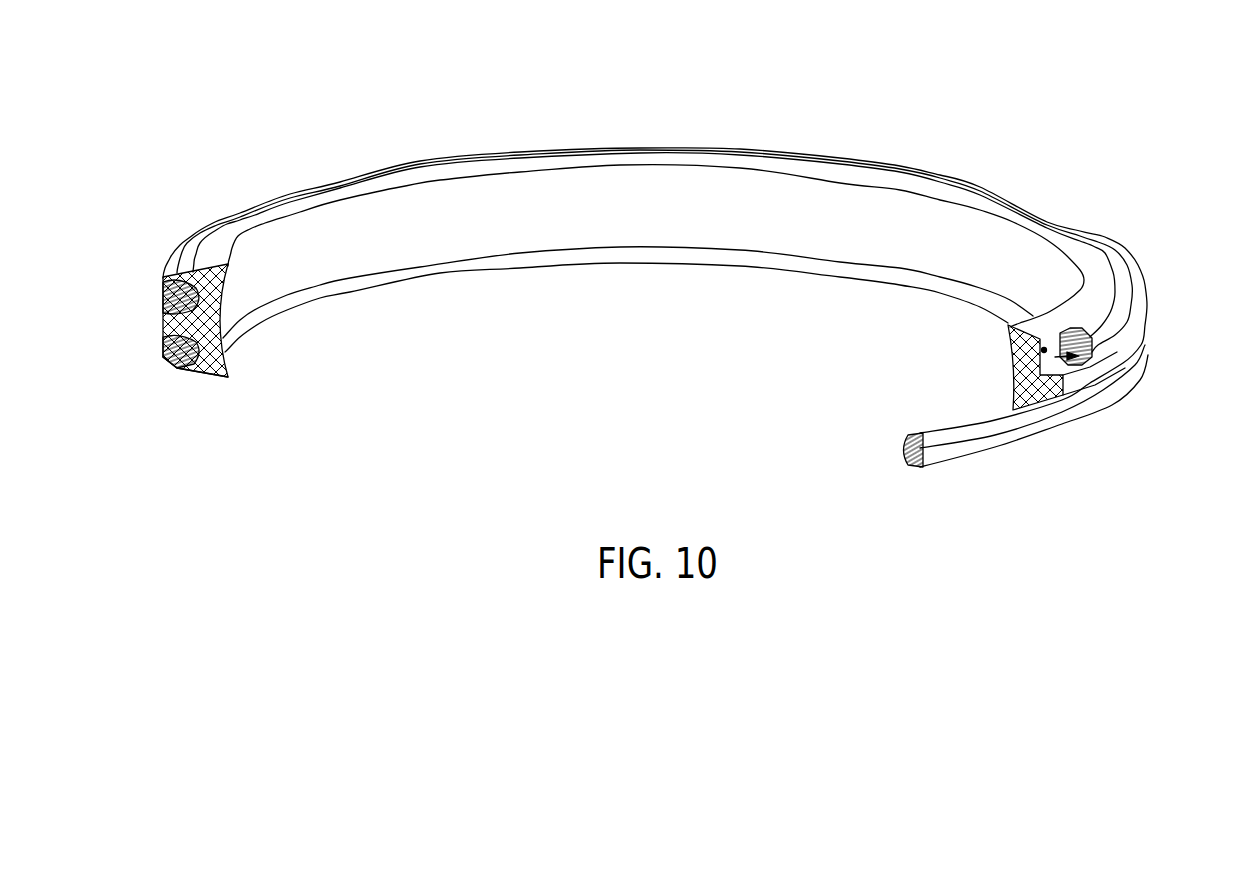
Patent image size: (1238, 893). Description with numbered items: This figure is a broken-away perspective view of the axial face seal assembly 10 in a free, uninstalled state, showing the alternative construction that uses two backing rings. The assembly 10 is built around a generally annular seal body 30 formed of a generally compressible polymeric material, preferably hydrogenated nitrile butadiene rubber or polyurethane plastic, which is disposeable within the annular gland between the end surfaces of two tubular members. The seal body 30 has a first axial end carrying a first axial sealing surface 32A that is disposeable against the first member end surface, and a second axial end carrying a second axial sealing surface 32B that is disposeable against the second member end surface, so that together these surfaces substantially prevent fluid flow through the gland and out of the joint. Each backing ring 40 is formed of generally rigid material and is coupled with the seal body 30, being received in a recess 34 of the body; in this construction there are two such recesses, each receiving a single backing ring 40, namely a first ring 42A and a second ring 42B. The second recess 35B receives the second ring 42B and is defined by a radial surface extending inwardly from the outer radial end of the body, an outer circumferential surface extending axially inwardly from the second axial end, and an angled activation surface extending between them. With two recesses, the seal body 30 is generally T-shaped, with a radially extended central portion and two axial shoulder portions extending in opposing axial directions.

The axial face seal assembly 10 is at (653, 251).
The seal body 30 is at (645, 308).
The first axial sealing surface 32A is at (221, 378).
The second axial sealing surface 32B is at (1088, 267).
The recess 34 is at (1094, 342).
The second recess 35B is at (1040, 352).
The backing ring 40 is at (626, 290).
The first ring 42A is at (176, 378).
The second ring 42B is at (169, 268).